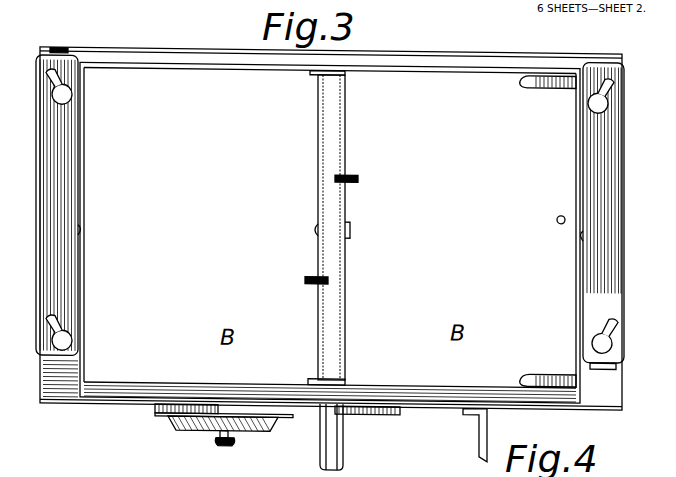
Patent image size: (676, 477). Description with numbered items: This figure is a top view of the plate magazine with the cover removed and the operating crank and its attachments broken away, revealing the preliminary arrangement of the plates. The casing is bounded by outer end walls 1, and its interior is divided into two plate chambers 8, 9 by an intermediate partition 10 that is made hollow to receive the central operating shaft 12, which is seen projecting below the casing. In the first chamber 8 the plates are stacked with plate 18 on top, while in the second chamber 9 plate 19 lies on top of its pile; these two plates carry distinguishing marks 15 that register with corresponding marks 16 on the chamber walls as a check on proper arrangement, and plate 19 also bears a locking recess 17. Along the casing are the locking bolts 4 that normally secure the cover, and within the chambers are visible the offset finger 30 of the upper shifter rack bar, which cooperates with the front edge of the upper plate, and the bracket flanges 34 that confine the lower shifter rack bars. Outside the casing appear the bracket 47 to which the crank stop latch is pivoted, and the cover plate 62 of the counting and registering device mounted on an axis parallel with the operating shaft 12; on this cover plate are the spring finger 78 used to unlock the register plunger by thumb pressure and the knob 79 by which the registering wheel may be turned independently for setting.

The outer end wall 1 is at (45, 379).
The locking bolt 4 is at (42, 306).
The plate chamber 8 is at (104, 384).
The plate chamber 9 is at (445, 386).
The partition 10 is at (348, 330).
The operating shaft 12 is at (345, 456).
The distinguishing mark 15 is at (360, 176).
The mark 16 is at (332, 176).
The locking recess 17 is at (561, 213).
The plate 18 is at (200, 225).
The plate 19 is at (462, 229).
The offset finger 30 is at (312, 76).
The bracket flange 34 is at (556, 87).
The bracket 47 is at (496, 428).
The cover plate 62 is at (203, 428).
The spring finger 78 is at (216, 436).
The knob 79 is at (234, 446).